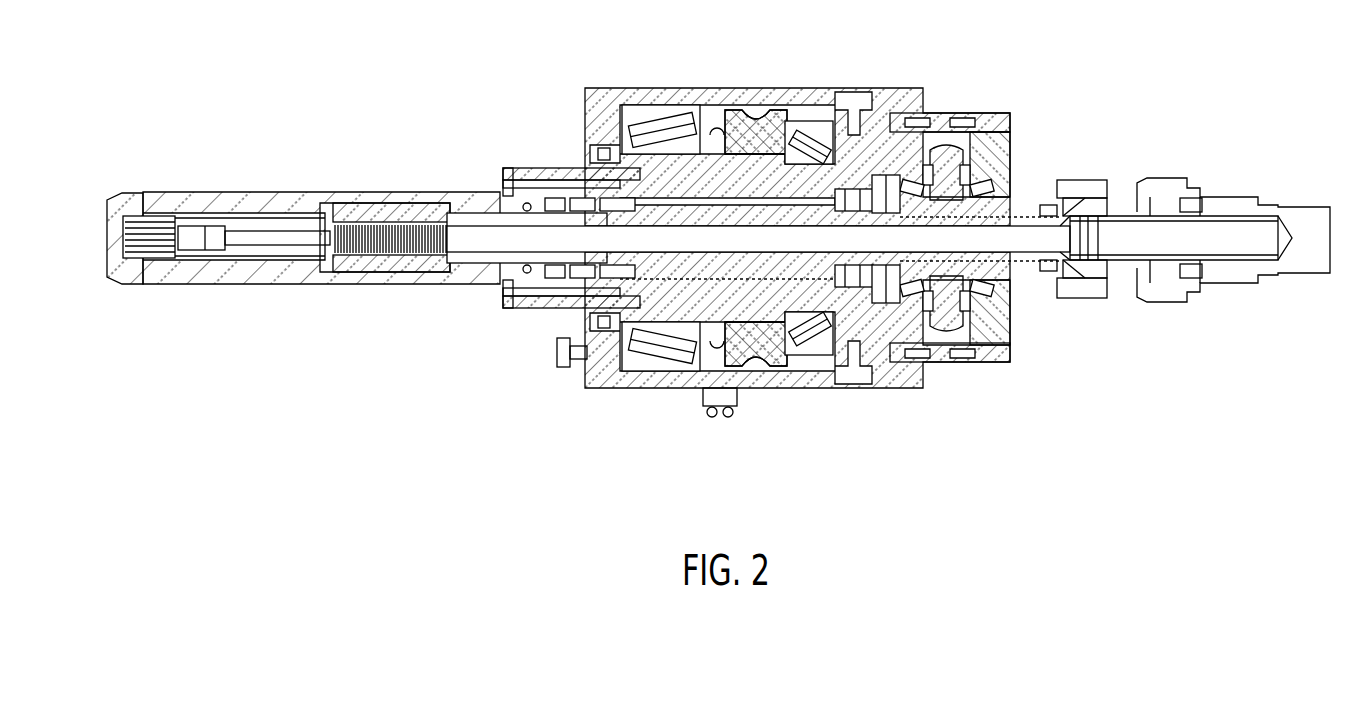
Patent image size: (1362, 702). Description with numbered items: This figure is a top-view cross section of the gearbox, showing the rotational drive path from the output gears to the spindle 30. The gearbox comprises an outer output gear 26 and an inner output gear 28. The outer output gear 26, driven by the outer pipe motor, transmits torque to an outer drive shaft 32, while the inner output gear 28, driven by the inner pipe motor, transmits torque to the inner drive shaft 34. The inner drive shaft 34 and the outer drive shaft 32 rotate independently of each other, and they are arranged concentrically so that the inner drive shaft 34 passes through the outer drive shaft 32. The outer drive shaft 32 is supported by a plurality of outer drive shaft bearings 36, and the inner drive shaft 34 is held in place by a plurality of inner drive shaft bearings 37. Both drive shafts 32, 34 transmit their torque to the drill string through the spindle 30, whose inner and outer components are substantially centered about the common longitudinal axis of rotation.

The outer output gear 26 is at (735, 110).
The inner output gear 28 is at (988, 128).
The spindle 30 is at (401, 330).
The outer drive shaft 32 is at (683, 305).
The inner drive shaft 34 is at (725, 262).
The outer drive shaft bearings 36 is at (640, 112).
The inner drive shaft bearings 37 is at (605, 193).